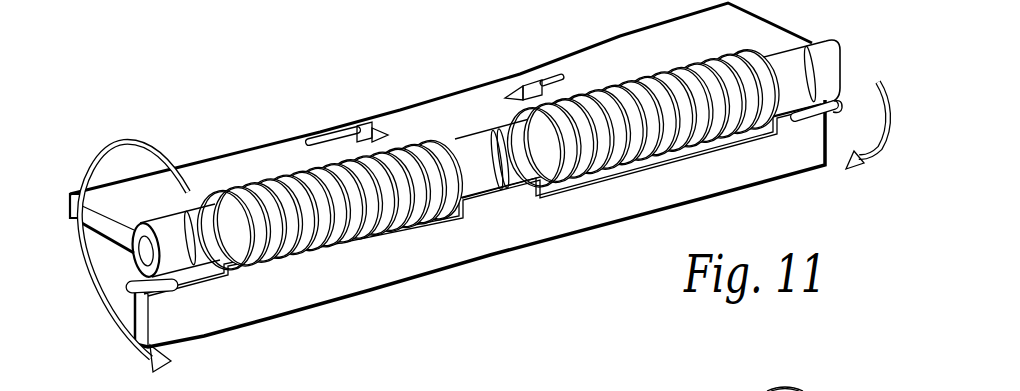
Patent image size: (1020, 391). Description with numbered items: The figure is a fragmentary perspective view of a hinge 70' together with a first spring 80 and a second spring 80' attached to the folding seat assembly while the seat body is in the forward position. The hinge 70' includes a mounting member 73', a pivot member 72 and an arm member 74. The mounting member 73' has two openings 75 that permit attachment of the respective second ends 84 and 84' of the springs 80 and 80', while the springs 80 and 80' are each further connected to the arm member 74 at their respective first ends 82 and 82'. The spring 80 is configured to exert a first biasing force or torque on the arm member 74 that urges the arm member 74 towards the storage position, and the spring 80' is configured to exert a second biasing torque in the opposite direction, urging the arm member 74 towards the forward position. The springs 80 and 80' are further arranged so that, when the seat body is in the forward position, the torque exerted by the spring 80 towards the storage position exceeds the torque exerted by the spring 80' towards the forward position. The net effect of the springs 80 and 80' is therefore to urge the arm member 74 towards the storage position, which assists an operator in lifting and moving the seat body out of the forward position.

The hinge 70' is at (168, 215).
The pivot member 72 is at (137, 247).
The mounting member 73' is at (441, 110).
The arm member 74 is at (453, 256).
The openings 75 is at (381, 131).
The first spring 80 is at (329, 194).
The second spring 80' is at (643, 118).
The first end 82 is at (161, 311).
The first end 82' is at (810, 134).
The second end 84 is at (332, 118).
The second end 84' is at (533, 64).